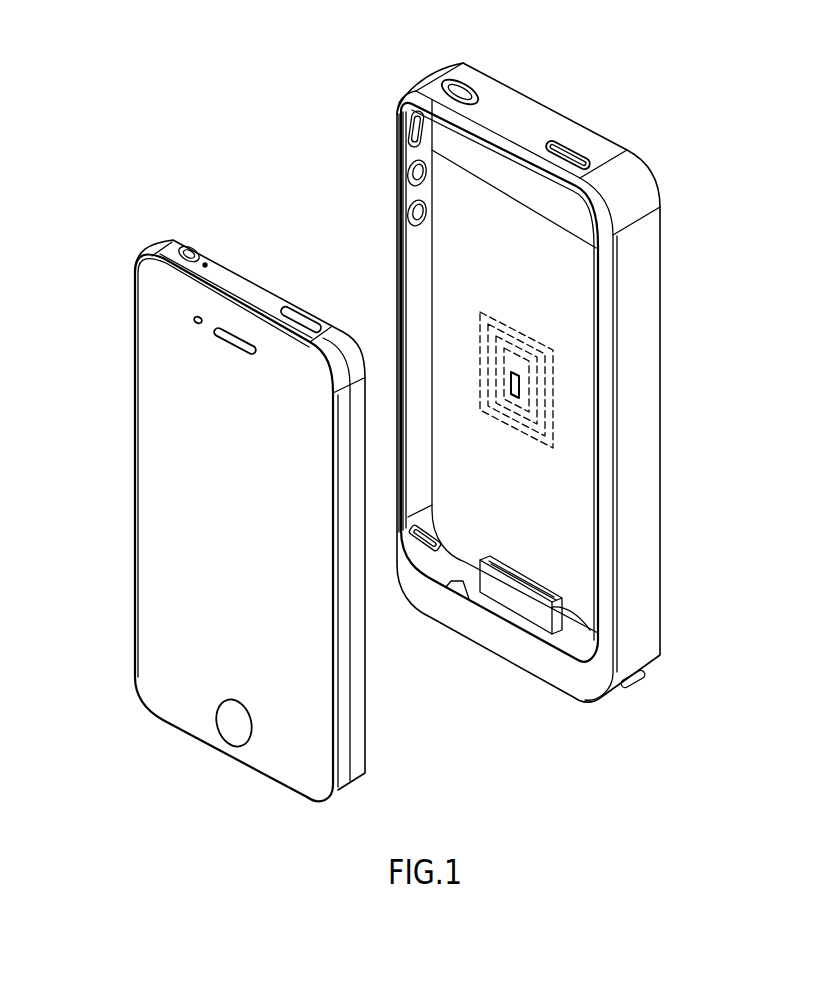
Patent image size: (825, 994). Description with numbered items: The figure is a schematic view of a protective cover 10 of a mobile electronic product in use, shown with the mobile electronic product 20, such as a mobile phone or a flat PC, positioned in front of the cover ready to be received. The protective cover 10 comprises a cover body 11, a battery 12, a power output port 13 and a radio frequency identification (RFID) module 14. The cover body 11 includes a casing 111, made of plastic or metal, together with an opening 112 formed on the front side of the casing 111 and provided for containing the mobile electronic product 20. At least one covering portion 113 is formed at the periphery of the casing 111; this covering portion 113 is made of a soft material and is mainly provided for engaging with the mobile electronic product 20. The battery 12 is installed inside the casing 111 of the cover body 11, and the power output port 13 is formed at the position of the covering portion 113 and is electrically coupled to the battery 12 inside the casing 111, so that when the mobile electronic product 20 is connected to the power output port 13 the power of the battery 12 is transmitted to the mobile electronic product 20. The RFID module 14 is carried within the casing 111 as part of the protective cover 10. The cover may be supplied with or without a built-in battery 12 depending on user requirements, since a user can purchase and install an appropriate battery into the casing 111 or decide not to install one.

The protective cover 10 is at (640, 147).
The cover body 11 is at (278, 77).
The casing 111 is at (400, 253).
The opening 112 is at (398, 148).
The covering portion 113 is at (445, 260).
The battery 12 is at (547, 275).
The power output port 13 is at (517, 585).
The radio frequency identification (RFID) module 14 is at (553, 368).
The mobile electronic product 20 is at (162, 492).